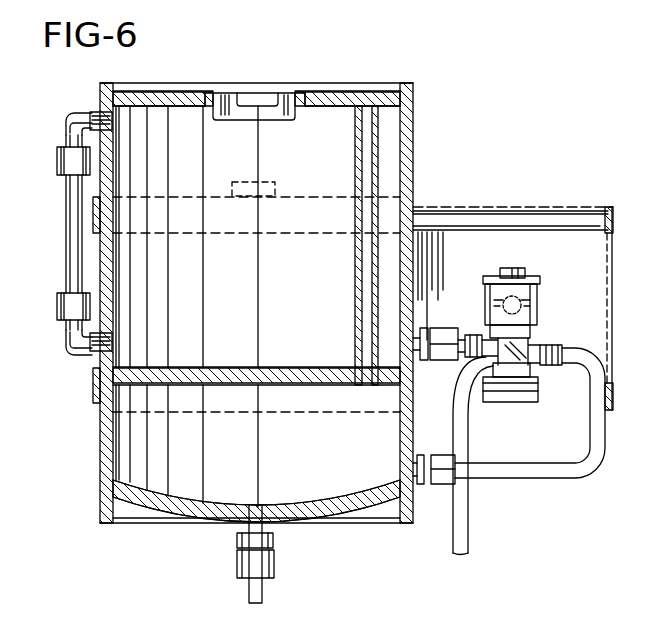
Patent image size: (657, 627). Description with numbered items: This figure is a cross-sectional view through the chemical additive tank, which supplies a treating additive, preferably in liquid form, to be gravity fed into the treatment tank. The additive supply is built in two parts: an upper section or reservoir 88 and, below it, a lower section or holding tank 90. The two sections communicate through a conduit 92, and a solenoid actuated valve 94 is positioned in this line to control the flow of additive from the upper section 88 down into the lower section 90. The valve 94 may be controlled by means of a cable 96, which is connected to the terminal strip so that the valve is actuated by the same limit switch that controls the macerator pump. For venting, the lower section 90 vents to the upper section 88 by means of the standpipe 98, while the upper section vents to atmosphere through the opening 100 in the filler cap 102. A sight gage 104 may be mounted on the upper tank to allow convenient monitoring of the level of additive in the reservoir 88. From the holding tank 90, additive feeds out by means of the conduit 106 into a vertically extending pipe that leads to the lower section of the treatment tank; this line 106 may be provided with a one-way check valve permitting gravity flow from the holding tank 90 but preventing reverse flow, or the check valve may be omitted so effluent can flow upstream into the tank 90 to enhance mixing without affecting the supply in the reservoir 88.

The upper section or reservoir 88 is at (313, 306).
The lower section or holding tank 90 is at (322, 457).
The conduit 92 is at (562, 473).
The solenoid actuated valve 94 is at (520, 343).
The cable 96 is at (463, 523).
The standpipe 98 is at (358, 113).
The opening 100 is at (270, 102).
The filler cap 102 is at (255, 100).
The sight gage 104 is at (73, 238).
The conduit 106 is at (263, 590).